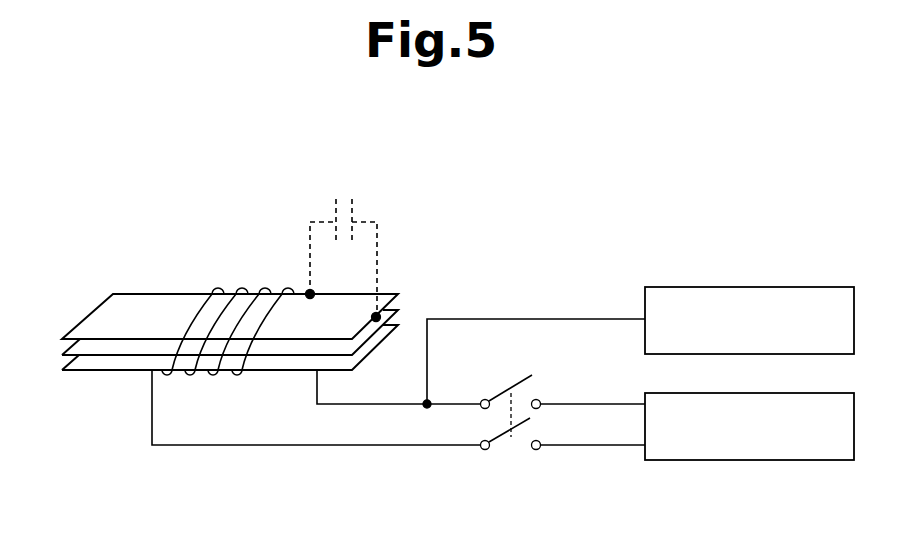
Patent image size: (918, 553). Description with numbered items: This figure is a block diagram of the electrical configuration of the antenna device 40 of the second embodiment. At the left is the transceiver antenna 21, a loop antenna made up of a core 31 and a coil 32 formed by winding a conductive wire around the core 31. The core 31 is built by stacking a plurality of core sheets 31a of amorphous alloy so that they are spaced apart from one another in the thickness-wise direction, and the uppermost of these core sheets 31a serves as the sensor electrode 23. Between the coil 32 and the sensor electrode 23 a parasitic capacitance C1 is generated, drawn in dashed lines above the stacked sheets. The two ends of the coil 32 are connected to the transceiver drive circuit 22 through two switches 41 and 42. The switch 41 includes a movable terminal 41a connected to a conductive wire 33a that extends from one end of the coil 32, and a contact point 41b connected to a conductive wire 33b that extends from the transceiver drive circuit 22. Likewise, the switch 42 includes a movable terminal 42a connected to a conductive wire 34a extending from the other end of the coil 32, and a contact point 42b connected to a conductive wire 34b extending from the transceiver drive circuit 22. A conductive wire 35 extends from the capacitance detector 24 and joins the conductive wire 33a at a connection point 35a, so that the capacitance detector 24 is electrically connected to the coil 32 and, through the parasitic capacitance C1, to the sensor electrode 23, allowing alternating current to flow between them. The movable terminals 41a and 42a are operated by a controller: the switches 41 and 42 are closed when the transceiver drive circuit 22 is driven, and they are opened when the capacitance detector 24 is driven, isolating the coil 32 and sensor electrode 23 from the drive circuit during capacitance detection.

The transceiver antenna 21 is at (83, 313).
The transceiver drive circuit 22 is at (748, 460).
The sensor electrode 23 is at (133, 300).
The capacitance detector 24 is at (748, 287).
The core 31 is at (92, 373).
The core sheet 31a is at (395, 340).
The coil 32 is at (264, 290).
The conductive wire 33a is at (317, 388).
The conductive wire 33b is at (611, 403).
The conductive wire 34a is at (152, 420).
The conductive wire 34b is at (612, 448).
The conductive wire 35 is at (538, 318).
The connection point 35a is at (426, 410).
The antenna device 40 is at (571, 209).
The switch 41 is at (546, 353).
The movable terminal 41a is at (486, 398).
The contact point 41b is at (541, 400).
The switch 42 is at (527, 423).
The movable terminal 42a is at (489, 450).
The contact point 42b is at (538, 450).
The parasitic capacitance C1 is at (378, 256).